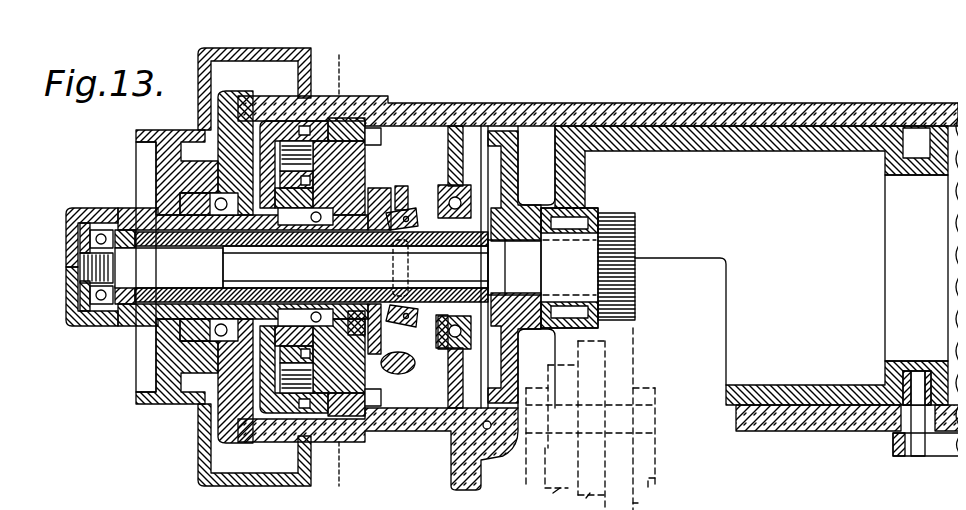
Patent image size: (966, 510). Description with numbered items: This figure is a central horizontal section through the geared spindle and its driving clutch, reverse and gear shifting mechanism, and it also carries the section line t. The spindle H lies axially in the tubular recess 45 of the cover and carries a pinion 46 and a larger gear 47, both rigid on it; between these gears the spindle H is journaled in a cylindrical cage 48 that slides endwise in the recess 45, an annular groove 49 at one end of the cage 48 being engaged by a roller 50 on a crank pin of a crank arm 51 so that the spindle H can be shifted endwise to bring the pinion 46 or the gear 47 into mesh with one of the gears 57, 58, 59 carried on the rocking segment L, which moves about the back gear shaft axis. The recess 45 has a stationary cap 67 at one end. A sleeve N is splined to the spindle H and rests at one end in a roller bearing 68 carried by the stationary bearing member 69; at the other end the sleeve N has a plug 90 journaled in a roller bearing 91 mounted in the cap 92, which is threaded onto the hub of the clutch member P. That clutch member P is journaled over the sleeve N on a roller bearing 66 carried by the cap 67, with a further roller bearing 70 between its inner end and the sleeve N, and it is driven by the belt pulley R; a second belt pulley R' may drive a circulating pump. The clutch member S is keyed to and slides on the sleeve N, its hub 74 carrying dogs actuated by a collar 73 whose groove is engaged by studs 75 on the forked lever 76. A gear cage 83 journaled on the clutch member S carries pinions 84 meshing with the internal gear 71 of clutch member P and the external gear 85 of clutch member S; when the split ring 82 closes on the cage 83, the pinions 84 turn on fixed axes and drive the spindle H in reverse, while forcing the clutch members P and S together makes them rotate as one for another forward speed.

The tubular recess 45 is at (556, 104).
The pinion 46 is at (619, 202).
The gear 47 is at (512, 140).
The cylindrical cage 48 is at (734, 146).
The annular groove 49 is at (905, 152).
The roller 50 is at (893, 370).
The crank arm 51 is at (908, 449).
The gear 57 is at (558, 499).
The gear 58 is at (588, 501).
The gear 59 is at (651, 503).
The roller bearing 66 is at (190, 160).
The stationary cap 67 is at (226, 89).
The roller bearing 68 is at (427, 177).
The stationary bearing member 69 is at (447, 103).
The roller bearing 70 is at (383, 361).
The internal gear 71 is at (338, 107).
The collar 73 is at (390, 188).
The hub 74 is at (414, 329).
The studs 75 is at (400, 258).
The forked lever 76 is at (405, 426).
The split ring 82 is at (347, 425).
The gear cage 83 is at (358, 168).
The pinions 84 is at (322, 104).
The external gear 85 is at (352, 350).
The plug 90 is at (169, 268).
The roller bearing 91 is at (62, 312).
The cap 92 is at (84, 318).
The spindle H is at (338, 267).
The rocking segment L is at (603, 419).
The sleeve N is at (473, 205).
The clutch member P is at (268, 120).
The belt pulley R is at (254, 266).
The belt pulley R' is at (130, 294).
The clutch member S is at (395, 194).
The section line t is at (334, 271).